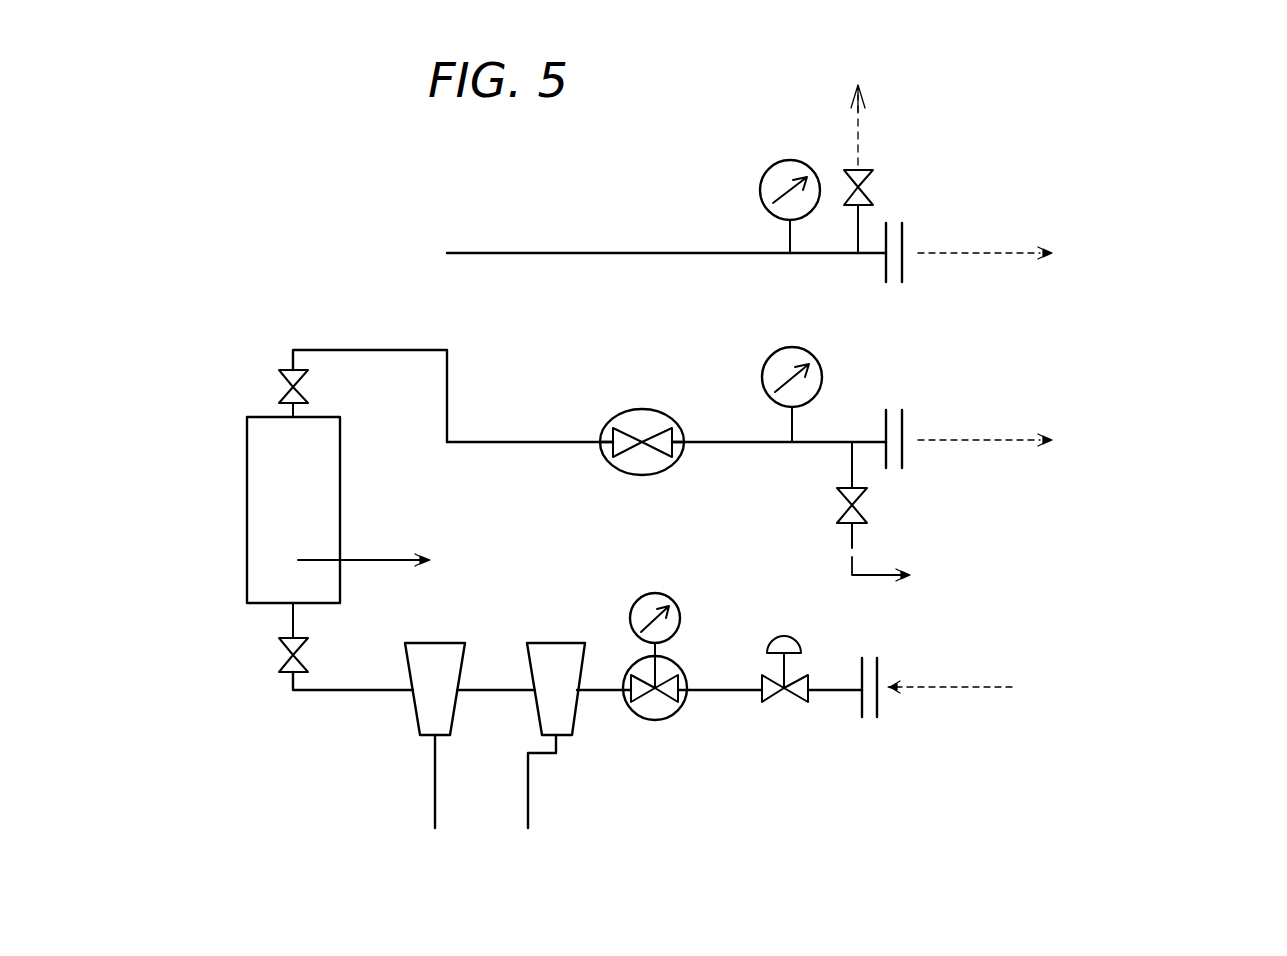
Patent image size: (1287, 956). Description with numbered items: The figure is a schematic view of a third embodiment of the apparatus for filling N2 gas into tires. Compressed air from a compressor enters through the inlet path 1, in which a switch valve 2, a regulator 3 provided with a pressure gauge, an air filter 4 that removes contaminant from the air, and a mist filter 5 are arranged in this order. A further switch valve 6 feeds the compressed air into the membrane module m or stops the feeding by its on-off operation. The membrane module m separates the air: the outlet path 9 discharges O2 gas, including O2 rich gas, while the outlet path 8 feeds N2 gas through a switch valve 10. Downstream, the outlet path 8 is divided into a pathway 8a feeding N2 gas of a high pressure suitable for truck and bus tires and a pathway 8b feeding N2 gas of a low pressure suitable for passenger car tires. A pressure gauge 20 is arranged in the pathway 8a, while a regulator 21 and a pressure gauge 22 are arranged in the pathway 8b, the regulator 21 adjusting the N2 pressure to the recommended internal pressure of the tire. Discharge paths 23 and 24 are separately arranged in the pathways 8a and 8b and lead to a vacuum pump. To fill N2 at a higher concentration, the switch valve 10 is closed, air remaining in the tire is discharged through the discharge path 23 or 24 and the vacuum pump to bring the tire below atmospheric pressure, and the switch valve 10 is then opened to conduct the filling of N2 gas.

The inlet path 1 is at (343, 692).
The switch valve 2 is at (796, 703).
The regulator 3 is at (679, 712).
The air filter 4 is at (552, 643).
The mist filter 5 is at (440, 643).
The switch valve 6 is at (279, 657).
The outlet path 8 is at (360, 350).
The pathway 8a is at (615, 253).
The pathway 8b is at (553, 440).
The outlet path 9 is at (357, 560).
The switch valve 10 is at (279, 387).
The pressure gauge 20 is at (760, 190).
The regulator 21 is at (665, 412).
The pressure gauge 22 is at (822, 372).
The discharge path 23 is at (860, 160).
The discharge path 24 is at (852, 540).
The membrane module m is at (340, 497).